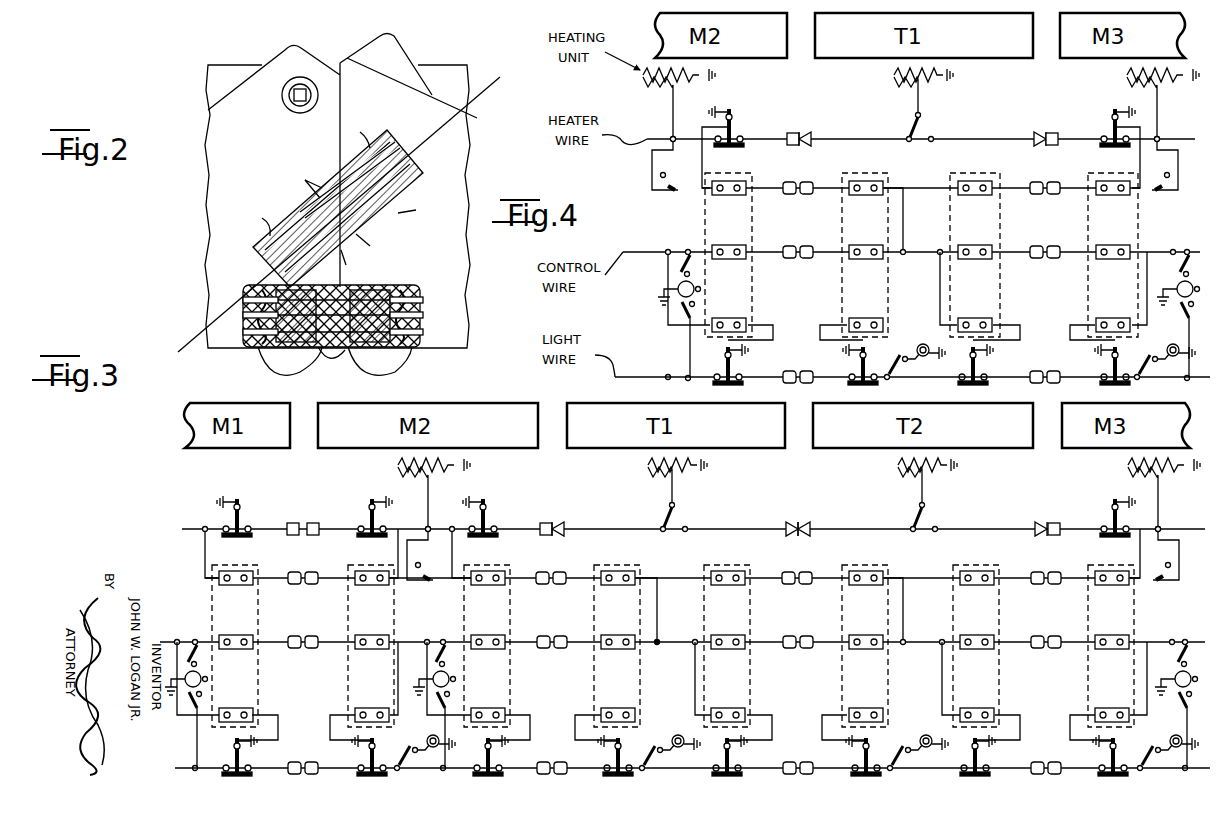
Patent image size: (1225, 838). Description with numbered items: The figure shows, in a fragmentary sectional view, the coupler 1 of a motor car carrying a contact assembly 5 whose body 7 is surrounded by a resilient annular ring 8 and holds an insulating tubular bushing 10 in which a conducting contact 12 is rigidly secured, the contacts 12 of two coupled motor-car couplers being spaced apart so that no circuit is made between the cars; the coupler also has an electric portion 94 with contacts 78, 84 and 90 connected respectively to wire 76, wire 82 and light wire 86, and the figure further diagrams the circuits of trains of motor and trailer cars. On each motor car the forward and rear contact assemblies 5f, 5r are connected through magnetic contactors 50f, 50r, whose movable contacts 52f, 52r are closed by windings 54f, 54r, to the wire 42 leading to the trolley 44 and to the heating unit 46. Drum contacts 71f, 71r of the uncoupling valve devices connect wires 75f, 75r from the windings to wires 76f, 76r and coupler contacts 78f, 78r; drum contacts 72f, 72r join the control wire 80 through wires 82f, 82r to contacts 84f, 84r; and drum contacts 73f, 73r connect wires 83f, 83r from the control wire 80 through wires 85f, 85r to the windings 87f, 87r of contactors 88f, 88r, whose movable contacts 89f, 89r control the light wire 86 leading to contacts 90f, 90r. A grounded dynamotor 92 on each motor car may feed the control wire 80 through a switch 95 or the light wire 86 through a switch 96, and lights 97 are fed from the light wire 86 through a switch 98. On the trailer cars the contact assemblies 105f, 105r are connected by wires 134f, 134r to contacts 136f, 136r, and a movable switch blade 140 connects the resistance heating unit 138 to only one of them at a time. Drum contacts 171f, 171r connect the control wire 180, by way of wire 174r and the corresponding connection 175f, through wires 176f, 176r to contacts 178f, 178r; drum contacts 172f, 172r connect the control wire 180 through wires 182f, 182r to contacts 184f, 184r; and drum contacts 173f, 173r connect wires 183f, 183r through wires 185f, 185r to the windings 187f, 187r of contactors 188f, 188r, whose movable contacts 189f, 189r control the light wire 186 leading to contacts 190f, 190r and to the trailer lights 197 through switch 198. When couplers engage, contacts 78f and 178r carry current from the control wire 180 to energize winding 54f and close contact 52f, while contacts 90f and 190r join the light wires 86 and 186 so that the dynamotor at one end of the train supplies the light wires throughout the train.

In FIG. 2, the coupler 1 is at (232, 63).
In FIG. 2, the contact assembly 5 is at (350, 153).
In FIG. 2, the body 7 is at (309, 179).
In FIG. 2, the annular ring 8 is at (307, 184).
In FIG. 2, the tubular bushing 10 is at (389, 239).
In FIG. 2, the contact 12 is at (373, 245).
In FIG. 2, the wire 42 is at (168, 333).
In FIG. 4, the wire 42 is at (647, 138).
In FIG. 3, the wire 42 is at (189, 520).
In FIG. 4, the trolley 44 is at (642, 175).
In FIG. 3, the trolley 44 is at (422, 561).
In FIG. 4, the heating unit 46 is at (643, 76).
In FIG. 3, the heating unit 46 is at (398, 465).
In FIG. 2, the wire 76 is at (250, 332).
In FIG. 2, the contact 78 is at (275, 349).
In FIG. 4, the control wire 80 is at (687, 248).
In FIG. 3, the control wire 80 is at (196, 640).
In FIG. 2, the wire 82 is at (250, 300).
In FIG. 2, the contact 84 is at (250, 316).
In FIG. 2, the light wire 86 is at (252, 290).
In FIG. 4, the light wire 86 is at (706, 382).
In FIG. 3, the light wire 86 is at (181, 766).
In FIG. 2, the contact 90 is at (280, 290).
In FIG. 2, the electric portion 94 is at (313, 350).
In FIG. 4, the contact assembly 5f is at (788, 134).
In FIG. 3, the contact assembly 5f is at (294, 522).
In FIG. 4, the contact assembly 5r is at (1051, 132).
In FIG. 3, the contact assembly 5r is at (318, 508).
In FIG. 4, the magnetic contactor 50f is at (742, 133).
In FIG. 3, the magnetic contactor 50f is at (265, 510).
In FIG. 4, the magnetic contactor 50r is at (1069, 130).
In FIG. 3, the magnetic contactor 50r is at (360, 524).
In FIG. 4, the movable contact 52f is at (738, 150).
In FIG. 3, the movable contact 52f is at (245, 540).
In FIG. 4, the movable contact 52r is at (1127, 150).
In FIG. 3, the movable contact 52r is at (367, 539).
In FIG. 4, the winding 54f is at (732, 109).
In FIG. 3, the winding 54f is at (247, 498).
In FIG. 4, the winding 54r is at (1108, 125).
In FIG. 3, the winding 54r is at (373, 506).
In FIG. 4, the drum contact 71f is at (743, 195).
In FIG. 3, the drum contact 71f is at (249, 590).
In FIG. 4, the drum contact 71r is at (1124, 194).
In FIG. 3, the drum contact 71r is at (385, 590).
In FIG. 4, the drum contact 72f is at (740, 238).
In FIG. 3, the drum contact 72f is at (248, 630).
In FIG. 4, the drum contact 72r is at (1122, 238).
In FIG. 3, the drum contact 72r is at (382, 630).
In FIG. 4, the drum contact 73f is at (736, 318).
In FIG. 3, the drum contact 73f is at (246, 705).
In FIG. 4, the drum contact 73r is at (1118, 318).
In FIG. 3, the drum contact 73r is at (382, 705).
In FIG. 4, the wire 75f is at (701, 168).
In FIG. 3, the wire 75f is at (203, 568).
In FIG. 4, the wire 75r is at (1141, 172).
In FIG. 3, the wire 75r is at (779, 568).
In FIG. 4, the wire 76f is at (766, 186).
In FIG. 3, the wire 76f is at (285, 576).
In FIG. 3, the wire 76r is at (340, 576).
In FIG. 4, the contact 78f is at (790, 194).
In FIG. 3, the contact 78f is at (298, 587).
In FIG. 4, the contact 78r is at (1053, 182).
In FIG. 3, the contact 78r is at (312, 586).
In FIG. 4, the wire 82f is at (757, 258).
In FIG. 3, the wire 82f is at (270, 652).
In FIG. 4, the wire 82r is at (1098, 258).
In FIG. 3, the wire 82r is at (354, 648).
In FIG. 3, the wire 83f is at (174, 646).
In FIG. 4, the wire 83r is at (1148, 248).
In FIG. 3, the wire 83r is at (400, 640).
In FIG. 4, the contact 84f is at (793, 238).
In FIG. 3, the contact 84f is at (290, 638).
In FIG. 4, the contact 84r is at (1041, 246).
In FIG. 3, the contact 84r is at (306, 647).
In FIG. 4, the wire 85f is at (788, 323).
In FIG. 3, the wire 85f is at (288, 705).
In FIG. 4, the wire 85r is at (1056, 333).
In FIG. 3, the wire 85r is at (330, 715).
In FIG. 4, the winding 87f is at (724, 354).
In FIG. 3, the winding 87f is at (235, 741).
In FIG. 4, the winding 87r is at (860, 349).
In FIG. 3, the winding 87r is at (362, 739).
In FIG. 4, the magnetic contactor 88f is at (722, 378).
In FIG. 3, the magnetic contactor 88f is at (232, 770).
In FIG. 4, the magnetic contactor 88r is at (1148, 356).
In FIG. 3, the magnetic contactor 88r is at (410, 755).
In FIG. 4, the movable contact 89f is at (738, 383).
In FIG. 3, the movable contact 89f is at (245, 774).
In FIG. 4, the movable contact 89r is at (1103, 382).
In FIG. 3, the movable contact 89r is at (372, 774).
In FIG. 4, the contact 90f is at (789, 376).
In FIG. 3, the contact 90f is at (292, 763).
In FIG. 4, the contact 90r is at (1054, 376).
In FIG. 3, the contact 90r is at (313, 763).
In FIG. 4, the dynamotor 92 is at (700, 276).
In FIG. 3, the dynamotor 92 is at (205, 678).
In FIG. 4, the switch 95 is at (676, 272).
In FIG. 3, the switch 95 is at (205, 660).
In FIG. 4, the switch 96 is at (678, 324).
In FIG. 3, the switch 96 is at (195, 711).
In FIG. 4, the electric lights 97 is at (1158, 377).
In FIG. 3, the electric lights 97 is at (434, 742).
In FIG. 4, the switch 98 is at (1135, 377).
In FIG. 3, the switch 98 is at (398, 770).
In FIG. 4, the contact assembly 105f is at (1036, 138).
In FIG. 3, the contact assembly 105f is at (790, 508).
In FIG. 4, the contact assembly 105r is at (812, 128).
In FIG. 3, the contact assembly 105r is at (560, 508).
In FIG. 4, the wire 134f is at (980, 138).
In FIG. 3, the wire 134f is at (751, 524).
In FIG. 4, the wire 134r is at (870, 128).
In FIG. 3, the wire 134r is at (592, 524).
In FIG. 4, the contact 136f is at (931, 138).
In FIG. 3, the contact 136f is at (694, 510).
In FIG. 4, the contact 136r is at (909, 138).
In FIG. 3, the contact 136r is at (660, 524).
In FIG. 4, the heating unit 138 is at (896, 76).
In FIG. 3, the heating unit 138 is at (648, 467).
In FIG. 4, the movable switch blade 140 is at (913, 150).
In FIG. 3, the movable switch blade 140 is at (667, 536).
In FIG. 4, the drum contact 171f is at (973, 182).
In FIG. 3, the drum contact 171f is at (745, 560).
In FIG. 4, the drum contact 171r is at (870, 182).
In FIG. 3, the drum contact 171r is at (616, 572).
In FIG. 4, the drum contact 172f is at (976, 260).
In FIG. 3, the drum contact 172f is at (738, 630).
In FIG. 4, the drum contact 172r is at (870, 258).
In FIG. 3, the drum contact 172r is at (628, 630).
In FIG. 4, the drum contact 173f is at (972, 318).
In FIG. 3, the drum contact 173f is at (738, 705).
In FIG. 4, the drum contact 173r is at (864, 318).
In FIG. 3, the drum contact 173r is at (628, 705).
In FIG. 4, the wire 174r is at (902, 208).
In FIG. 3, the wire 174r is at (657, 598).
In FIG. 4, the front wire 175f is at (966, 194).
In FIG. 3, the front wire 175f is at (707, 588).
In FIG. 3, the wire 176f is at (760, 584).
In FIG. 4, the wire 176r is at (834, 199).
In FIG. 3, the wire 176r is at (598, 582).
In FIG. 4, the contact 178f is at (1037, 194).
In FIG. 3, the contact 178f is at (800, 569).
In FIG. 4, the contact 178r is at (810, 185).
In FIG. 3, the contact 178r is at (561, 572).
In FIG. 4, the control wire 180 is at (900, 248).
In FIG. 3, the control wire 180 is at (695, 640).
In FIG. 4, the wire 182f is at (1028, 238).
In FIG. 3, the wire 182f is at (790, 630).
In FIG. 4, the wire 182r is at (814, 260).
In FIG. 3, the wire 182r is at (590, 630).
In FIG. 4, the wire 183f is at (940, 290).
In FIG. 3, the wire 183f is at (694, 694).
In FIG. 4, the wire 183r is at (937, 278).
In FIG. 3, the wire 183r is at (694, 663).
In FIG. 4, the contact 184f is at (1035, 258).
In FIG. 3, the contact 184f is at (790, 647).
In FIG. 4, the contact 184r is at (820, 238).
In FIG. 3, the contact 184r is at (560, 647).
In FIG. 4, the wire 185f is at (1033, 323).
In FIG. 3, the wire 185f is at (788, 705).
In FIG. 4, the wire 185r is at (833, 323).
In FIG. 3, the wire 185r is at (588, 705).
In FIG. 4, the light wire 186 is at (927, 377).
In FIG. 3, the light wire 186 is at (670, 770).
In FIG. 4, the winding 187f is at (1020, 339).
In FIG. 3, the winding 187f is at (771, 729).
In FIG. 4, the winding 187r is at (823, 345).
In FIG. 3, the winding 187r is at (615, 737).
In FIG. 3, the magnetic contactor 188f is at (724, 764).
In FIG. 4, the magnetic contactor 188r is at (898, 355).
In FIG. 3, the magnetic contactor 188r is at (652, 756).
In FIG. 3, the movable contact 189f is at (740, 774).
In FIG. 4, the movable contact 189r is at (858, 382).
In FIG. 3, the movable contact 189r is at (620, 774).
In FIG. 4, the contact 190f is at (1037, 376).
In FIG. 3, the contact 190f is at (791, 763).
In FIG. 4, the contact 190r is at (825, 368).
In FIG. 3, the contact 190r is at (570, 755).
In FIG. 4, the electric lights 197 is at (922, 345).
In FIG. 3, the electric lights 197 is at (678, 733).
In FIG. 4, the switch 198 is at (887, 377).
In FIG. 3, the switch 198 is at (646, 770).